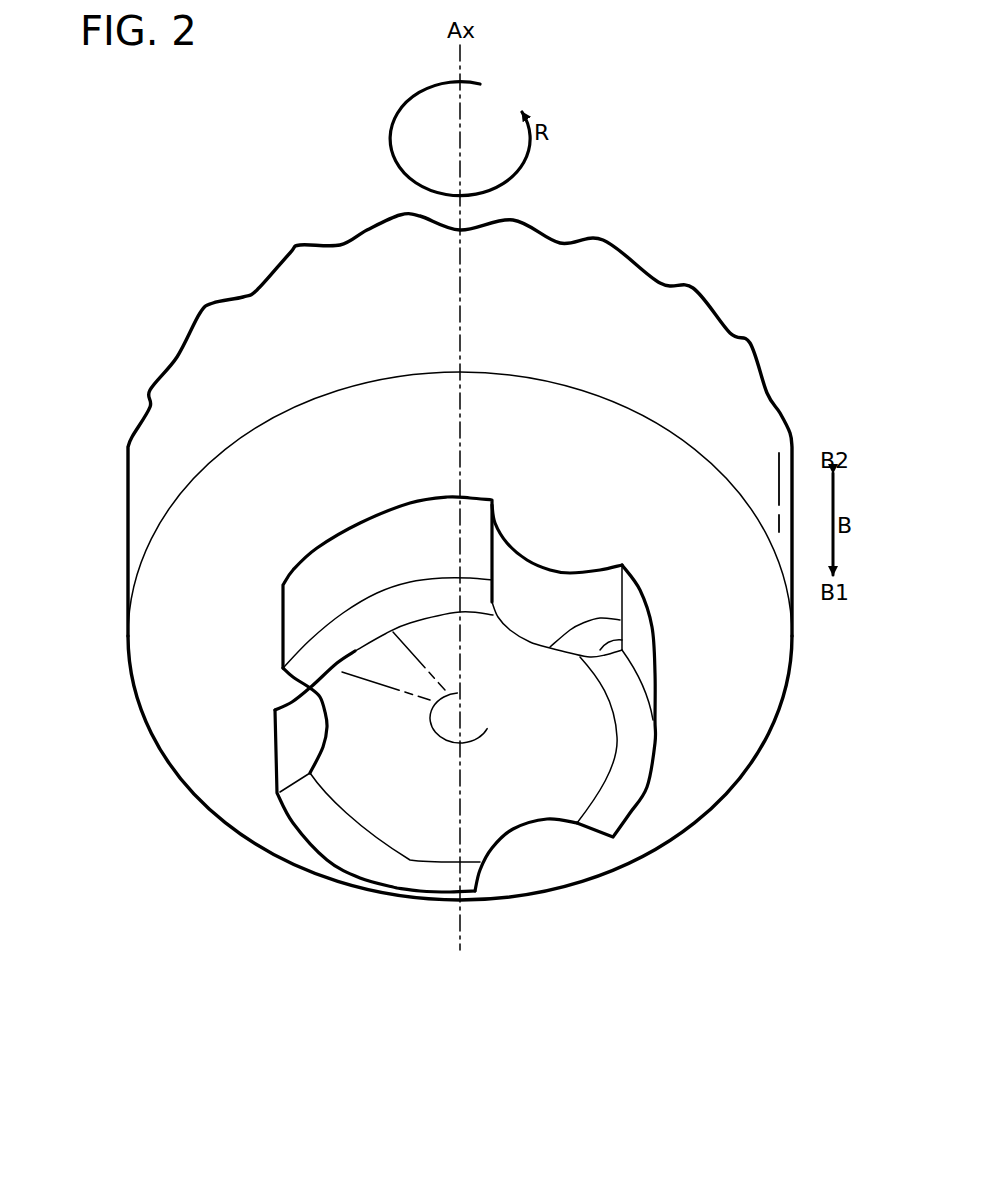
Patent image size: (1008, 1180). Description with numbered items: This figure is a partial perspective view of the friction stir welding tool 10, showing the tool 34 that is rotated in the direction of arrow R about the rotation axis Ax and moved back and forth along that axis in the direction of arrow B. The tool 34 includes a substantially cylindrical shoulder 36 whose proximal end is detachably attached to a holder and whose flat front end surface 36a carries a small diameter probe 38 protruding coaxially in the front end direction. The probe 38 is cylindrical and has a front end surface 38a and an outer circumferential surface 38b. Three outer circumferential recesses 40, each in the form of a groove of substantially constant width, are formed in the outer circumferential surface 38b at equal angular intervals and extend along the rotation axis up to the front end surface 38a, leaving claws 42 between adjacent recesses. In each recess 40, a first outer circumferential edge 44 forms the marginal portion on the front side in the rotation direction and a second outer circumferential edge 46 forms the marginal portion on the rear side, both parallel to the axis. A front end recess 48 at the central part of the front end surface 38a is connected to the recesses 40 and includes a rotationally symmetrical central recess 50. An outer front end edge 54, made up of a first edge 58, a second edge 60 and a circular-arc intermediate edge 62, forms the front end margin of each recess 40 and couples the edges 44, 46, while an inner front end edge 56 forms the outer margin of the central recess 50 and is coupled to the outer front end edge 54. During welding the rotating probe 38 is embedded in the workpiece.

The welding tool 10 is at (124, 142).
The tool 34 is at (160, 142).
The shoulder 36 is at (140, 530).
The front end surface 36a is at (160, 690).
The probe 38 is at (459, 726).
The front end surface 38a is at (620, 805).
The outer circumferential surface 38b is at (320, 573).
The outer circumferential recess 40 is at (548, 587).
The claw 42 is at (407, 580).
The first outer circumferential edge 44 is at (497, 551).
The second outer circumferential edge 46 is at (620, 577).
The front end recess 48 is at (433, 822).
The central recess 50 is at (353, 783).
The outer front end edge 54 is at (713, 586).
The inner front end edge 56 is at (617, 737).
The first edge 58 is at (493, 602).
The second edge 60 is at (622, 640).
The intermediate edge 62 is at (620, 620).